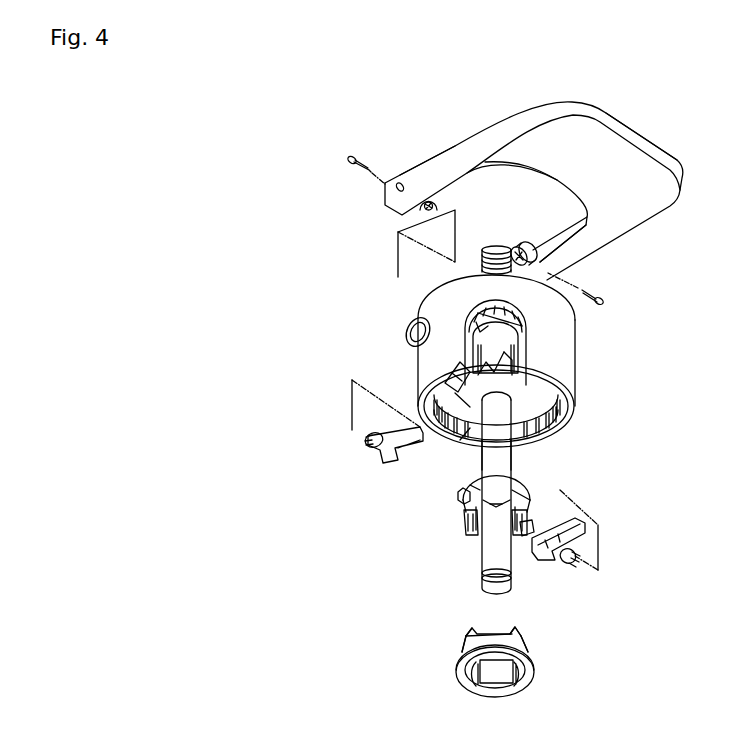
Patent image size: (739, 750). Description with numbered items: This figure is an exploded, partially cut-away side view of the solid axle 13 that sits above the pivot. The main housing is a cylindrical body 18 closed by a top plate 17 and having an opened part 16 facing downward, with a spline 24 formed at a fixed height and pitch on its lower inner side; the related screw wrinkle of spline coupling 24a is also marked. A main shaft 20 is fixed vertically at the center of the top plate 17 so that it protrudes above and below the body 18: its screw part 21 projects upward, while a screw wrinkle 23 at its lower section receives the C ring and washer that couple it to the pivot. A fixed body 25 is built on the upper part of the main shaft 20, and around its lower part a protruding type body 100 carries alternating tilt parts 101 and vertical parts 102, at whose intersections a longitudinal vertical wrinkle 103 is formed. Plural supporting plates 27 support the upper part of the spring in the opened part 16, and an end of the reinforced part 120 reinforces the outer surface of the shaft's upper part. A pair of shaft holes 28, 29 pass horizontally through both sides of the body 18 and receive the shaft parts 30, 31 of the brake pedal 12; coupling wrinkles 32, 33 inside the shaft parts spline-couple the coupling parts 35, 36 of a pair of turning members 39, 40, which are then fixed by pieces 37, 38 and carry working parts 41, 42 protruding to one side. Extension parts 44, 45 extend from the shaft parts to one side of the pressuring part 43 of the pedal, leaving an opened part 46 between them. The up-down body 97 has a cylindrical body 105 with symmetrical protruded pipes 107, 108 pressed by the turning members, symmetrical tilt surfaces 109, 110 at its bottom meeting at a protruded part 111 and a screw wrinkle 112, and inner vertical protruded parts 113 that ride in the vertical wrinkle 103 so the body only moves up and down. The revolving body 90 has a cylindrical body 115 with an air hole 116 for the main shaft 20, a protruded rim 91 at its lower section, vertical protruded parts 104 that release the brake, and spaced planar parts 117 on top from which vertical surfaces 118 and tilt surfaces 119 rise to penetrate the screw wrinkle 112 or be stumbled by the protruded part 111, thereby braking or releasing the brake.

The brake pedal 12 is at (658, 210).
The solid axle 13 is at (345, 126).
The opened part 16 is at (562, 405).
The top plate 17 is at (485, 310).
The cylindrical body 18 is at (577, 356).
The main shaft 20 is at (482, 556).
The screw part 21 is at (485, 252).
The screw wrinkle 23 is at (482, 576).
The spline 24 is at (465, 440).
The screw wrinkle of spline coupling 24a is at (525, 455).
The fixed body 25 is at (540, 331).
The supporting plate 27 is at (450, 385).
The shaft hole 28 is at (408, 336).
The shaft hole 29 is at (552, 430).
The shaft part 30 is at (426, 215).
The shaft part 31 is at (529, 248).
The coupling wrinkle 32 is at (438, 203).
The coupling wrinkle 33 is at (517, 252).
The coupling part 35 is at (380, 452).
The coupling part 36 is at (572, 564).
The piece 37 is at (350, 157).
The piece 38 is at (604, 301).
The turning member 39 is at (363, 453).
The turning member 40 is at (582, 545).
The working part 41 is at (420, 446).
The working part 42 is at (582, 521).
The pressuring part 43 is at (604, 113).
The extension part 44 is at (437, 157).
The extension part 45 is at (580, 255).
The opened part 46 is at (493, 182).
The revolving body 90 is at (440, 672).
The protruded rim 91 is at (457, 672).
The up-down body 97 is at (446, 507).
The protruding type body 100 is at (478, 322).
The tilt part 101 is at (525, 365).
The vertical part 102 is at (490, 373).
The vertical wrinkle 103 is at (476, 352).
The vertical protruded part 104 is at (478, 685).
The cylindrical body 105 is at (526, 493).
The protruded pipe 107 is at (458, 494).
The protruded pipe 108 is at (532, 525).
The tilt surface 109 is at (482, 490).
The tilt surface 110 is at (497, 507).
The protruded part 111 is at (495, 510).
The screw wrinkle 112 is at (502, 482).
The vertical protruded part 113 is at (468, 524).
The cylindrical body 115 is at (524, 654).
The air hole 116 is at (495, 680).
The planar part 117 is at (497, 633).
The vertical surface 118 is at (513, 632).
The tilt surface 119 is at (478, 630).
The reinforced part 120 is at (470, 407).